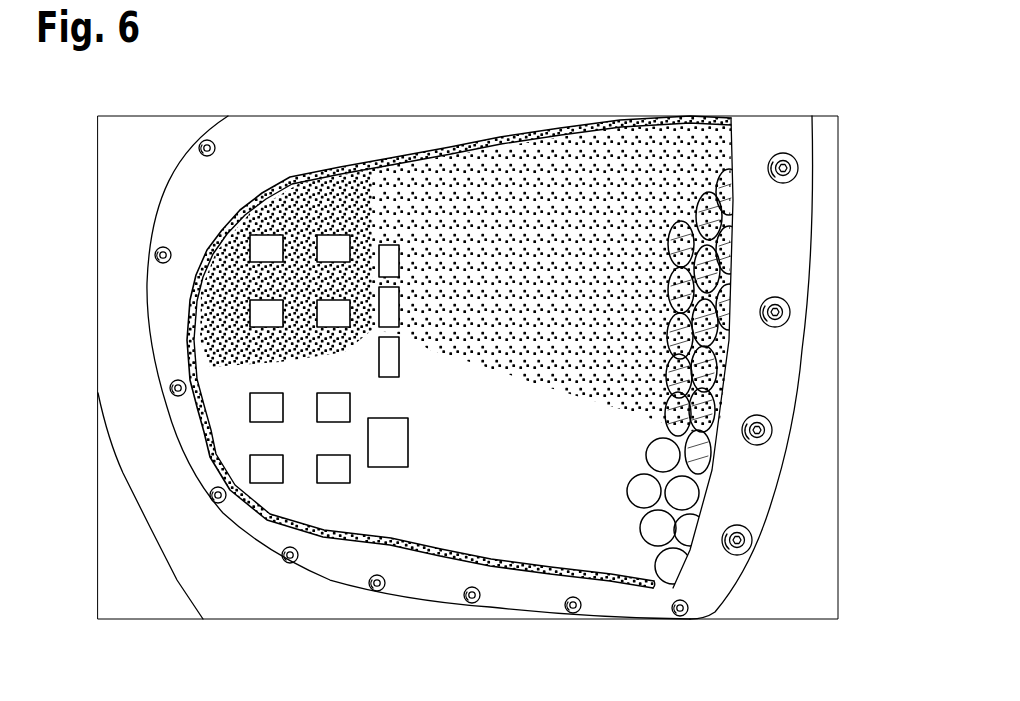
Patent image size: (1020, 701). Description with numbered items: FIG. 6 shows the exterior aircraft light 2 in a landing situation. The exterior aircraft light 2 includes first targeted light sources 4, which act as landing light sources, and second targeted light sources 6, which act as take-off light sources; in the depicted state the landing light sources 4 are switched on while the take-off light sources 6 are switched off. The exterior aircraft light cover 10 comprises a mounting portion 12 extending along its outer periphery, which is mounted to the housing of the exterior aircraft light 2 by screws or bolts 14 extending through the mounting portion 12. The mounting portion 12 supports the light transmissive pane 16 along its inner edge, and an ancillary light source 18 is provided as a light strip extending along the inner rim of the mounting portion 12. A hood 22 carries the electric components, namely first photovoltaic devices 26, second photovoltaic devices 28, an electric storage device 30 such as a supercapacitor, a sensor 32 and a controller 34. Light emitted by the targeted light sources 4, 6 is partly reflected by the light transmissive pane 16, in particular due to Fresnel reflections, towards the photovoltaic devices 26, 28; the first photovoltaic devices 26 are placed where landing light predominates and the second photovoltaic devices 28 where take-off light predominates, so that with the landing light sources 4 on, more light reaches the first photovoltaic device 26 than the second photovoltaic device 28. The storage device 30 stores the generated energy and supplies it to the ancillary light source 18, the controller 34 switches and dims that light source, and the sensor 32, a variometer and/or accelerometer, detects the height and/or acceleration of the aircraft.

The exterior aircraft light 2 is at (768, 103).
The first targeted light sources 4 is at (745, 254).
The second targeted light sources 6 is at (633, 552).
The exterior aircraft light cover 10 is at (460, 356).
The mounting portion 12 is at (400, 258).
The screws or bolts 14 is at (201, 142).
The light transmissive pane 16 is at (482, 467).
The ancillary light source 18 is at (567, 128).
The hood 22 is at (440, 466).
The first photovoltaic device 26 is at (264, 234).
The second photovoltaic device 28 is at (250, 407).
The electric storage device 30 is at (412, 545).
The sensor 32 is at (400, 366).
The controller 34 is at (386, 468).